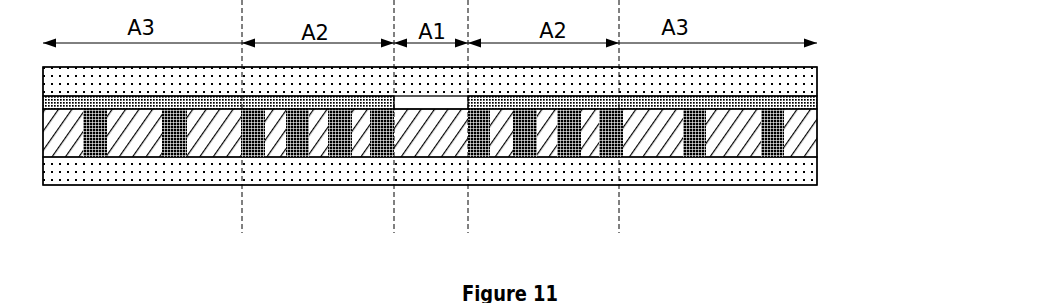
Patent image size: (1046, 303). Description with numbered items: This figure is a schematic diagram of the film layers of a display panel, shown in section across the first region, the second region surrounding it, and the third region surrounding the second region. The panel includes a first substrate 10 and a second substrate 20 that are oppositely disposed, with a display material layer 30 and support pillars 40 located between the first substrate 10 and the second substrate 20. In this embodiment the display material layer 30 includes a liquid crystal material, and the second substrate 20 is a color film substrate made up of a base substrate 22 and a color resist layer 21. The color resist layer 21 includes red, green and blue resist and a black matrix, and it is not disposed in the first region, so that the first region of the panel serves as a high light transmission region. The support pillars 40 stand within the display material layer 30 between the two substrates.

The first substrate 10 is at (818, 168).
The second substrate 20 is at (497, 92).
The color resist layer 21 is at (458, 104).
The base substrate 22 is at (818, 85).
The display material layer 30 is at (818, 130).
The support pillars 40 is at (697, 158).